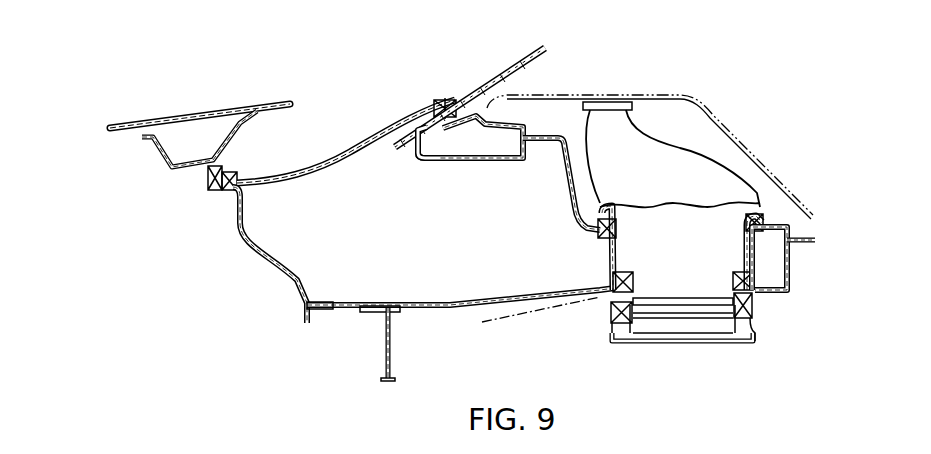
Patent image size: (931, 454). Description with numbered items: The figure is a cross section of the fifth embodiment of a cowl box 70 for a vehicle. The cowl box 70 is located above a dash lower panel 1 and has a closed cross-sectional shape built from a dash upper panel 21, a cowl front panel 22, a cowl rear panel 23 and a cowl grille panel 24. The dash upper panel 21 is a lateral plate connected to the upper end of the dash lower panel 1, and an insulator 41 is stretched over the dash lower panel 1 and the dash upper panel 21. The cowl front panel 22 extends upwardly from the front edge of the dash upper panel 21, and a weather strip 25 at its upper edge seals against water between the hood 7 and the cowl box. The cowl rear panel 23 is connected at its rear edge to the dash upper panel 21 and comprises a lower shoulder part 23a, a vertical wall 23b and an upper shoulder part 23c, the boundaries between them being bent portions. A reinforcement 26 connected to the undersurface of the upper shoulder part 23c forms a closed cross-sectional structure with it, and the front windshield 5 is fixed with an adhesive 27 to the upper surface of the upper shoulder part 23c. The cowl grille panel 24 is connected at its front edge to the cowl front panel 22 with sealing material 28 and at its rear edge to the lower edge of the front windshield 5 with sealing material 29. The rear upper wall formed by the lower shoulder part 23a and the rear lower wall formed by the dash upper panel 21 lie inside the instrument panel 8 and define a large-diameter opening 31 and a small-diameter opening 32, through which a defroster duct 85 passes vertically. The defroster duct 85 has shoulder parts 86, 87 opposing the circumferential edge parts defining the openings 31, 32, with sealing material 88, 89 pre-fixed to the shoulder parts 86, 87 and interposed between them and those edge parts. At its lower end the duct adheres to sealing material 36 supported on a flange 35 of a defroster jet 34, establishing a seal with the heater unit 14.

The dash lower panel 1 is at (385, 350).
The front windshield 5 is at (510, 71).
The hood 7 is at (254, 106).
The instrument panel 8 is at (682, 95).
The heater unit 14 is at (752, 329).
The dash upper panel 21 is at (448, 311).
The cowl front panel 22 is at (272, 258).
The cowl rear panel 23 is at (597, 226).
The lower shoulder part 23a is at (779, 226).
The vertical wall 23b is at (560, 147).
The upper shoulder part 23c is at (521, 122).
The cowl grille panel 24 is at (380, 138).
The weather strip 25 is at (210, 176).
The reinforcement 26 is at (470, 161).
The adhesive 27 is at (420, 150).
The sealing material 28 is at (234, 183).
The sealing material 29 is at (446, 100).
The opening 31 is at (757, 236).
The opening 32 is at (753, 298).
The defroster jet 34 is at (668, 331).
The flange 35 is at (612, 308).
The sealing material 36 is at (727, 310).
The insulator 41 is at (531, 318).
The cowl box 70 is at (343, 183).
The defroster duct 85 is at (715, 157).
The shoulder part 86 is at (746, 214).
The shoulder part 87 is at (745, 278).
The sealing material 88 is at (603, 238).
The sealing material 89 is at (612, 278).